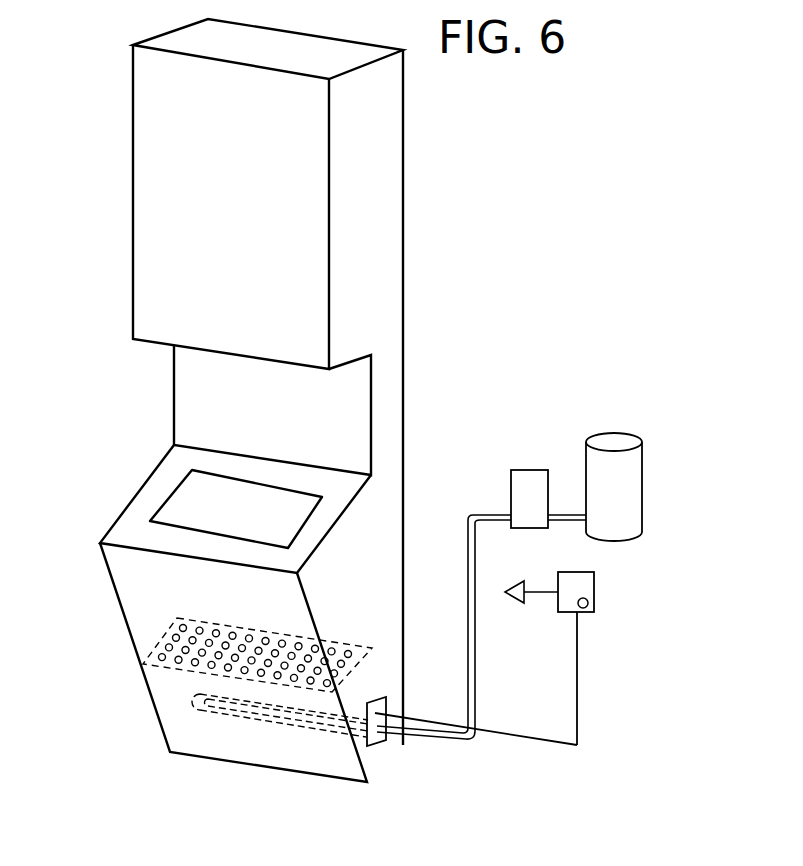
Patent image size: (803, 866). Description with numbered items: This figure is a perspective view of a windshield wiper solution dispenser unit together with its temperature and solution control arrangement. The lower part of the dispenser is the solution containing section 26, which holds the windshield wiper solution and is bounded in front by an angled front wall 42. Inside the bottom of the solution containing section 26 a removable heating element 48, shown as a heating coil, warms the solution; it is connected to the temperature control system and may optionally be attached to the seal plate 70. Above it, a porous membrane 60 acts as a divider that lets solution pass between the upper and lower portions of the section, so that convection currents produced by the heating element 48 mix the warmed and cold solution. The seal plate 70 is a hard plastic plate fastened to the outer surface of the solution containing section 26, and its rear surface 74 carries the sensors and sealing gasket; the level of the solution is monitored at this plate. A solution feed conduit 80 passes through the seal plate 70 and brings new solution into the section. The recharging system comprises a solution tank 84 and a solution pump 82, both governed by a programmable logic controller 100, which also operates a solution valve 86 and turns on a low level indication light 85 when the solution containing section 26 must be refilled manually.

The solution containing section 26 is at (128, 594).
The angled front wall 42 is at (228, 747).
The heating element 48 is at (224, 714).
The porous membrane 60 is at (183, 667).
The seal plate 70 is at (373, 732).
The rear surface 74 is at (372, 742).
The solution feed conduit 80 is at (473, 692).
The solution pump 82 is at (527, 475).
The solution tank 84 is at (635, 488).
The low level indication light 85 is at (590, 605).
The solution valve 86 is at (513, 598).
The programmable logic controller 100 is at (588, 583).